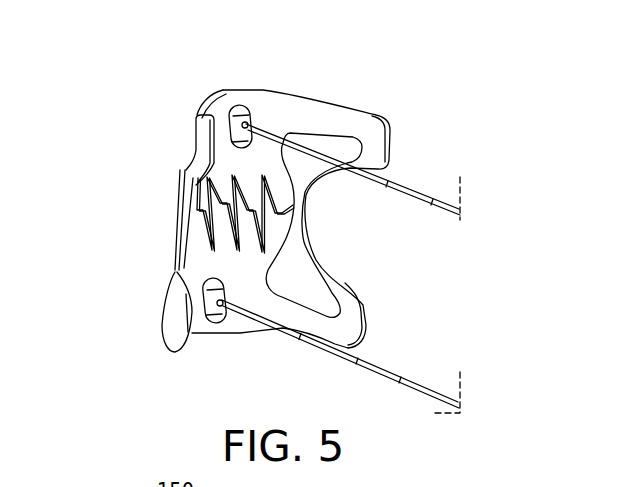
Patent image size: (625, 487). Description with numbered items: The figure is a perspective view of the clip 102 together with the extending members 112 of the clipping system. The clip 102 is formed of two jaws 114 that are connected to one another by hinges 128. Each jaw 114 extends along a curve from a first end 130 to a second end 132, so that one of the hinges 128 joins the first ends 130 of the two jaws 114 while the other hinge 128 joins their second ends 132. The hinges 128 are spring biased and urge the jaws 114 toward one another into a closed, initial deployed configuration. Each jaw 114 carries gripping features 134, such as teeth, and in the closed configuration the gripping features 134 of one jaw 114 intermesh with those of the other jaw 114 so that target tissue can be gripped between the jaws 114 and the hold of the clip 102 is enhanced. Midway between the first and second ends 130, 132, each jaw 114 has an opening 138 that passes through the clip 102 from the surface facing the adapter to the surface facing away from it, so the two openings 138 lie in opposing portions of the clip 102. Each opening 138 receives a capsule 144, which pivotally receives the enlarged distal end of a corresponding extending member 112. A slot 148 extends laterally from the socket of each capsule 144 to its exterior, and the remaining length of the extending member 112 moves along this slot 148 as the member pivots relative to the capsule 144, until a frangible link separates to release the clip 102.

The clip 102 is at (422, 128).
The extending member 112 is at (408, 192).
The jaw 114 is at (199, 139).
The hinge 128 is at (176, 243).
The first end 130 is at (204, 134).
The second end 132 is at (388, 133).
The gripping feature 134 is at (208, 188).
The opening 138 is at (239, 107).
The capsule 144 is at (252, 113).
The slot 148 is at (244, 121).